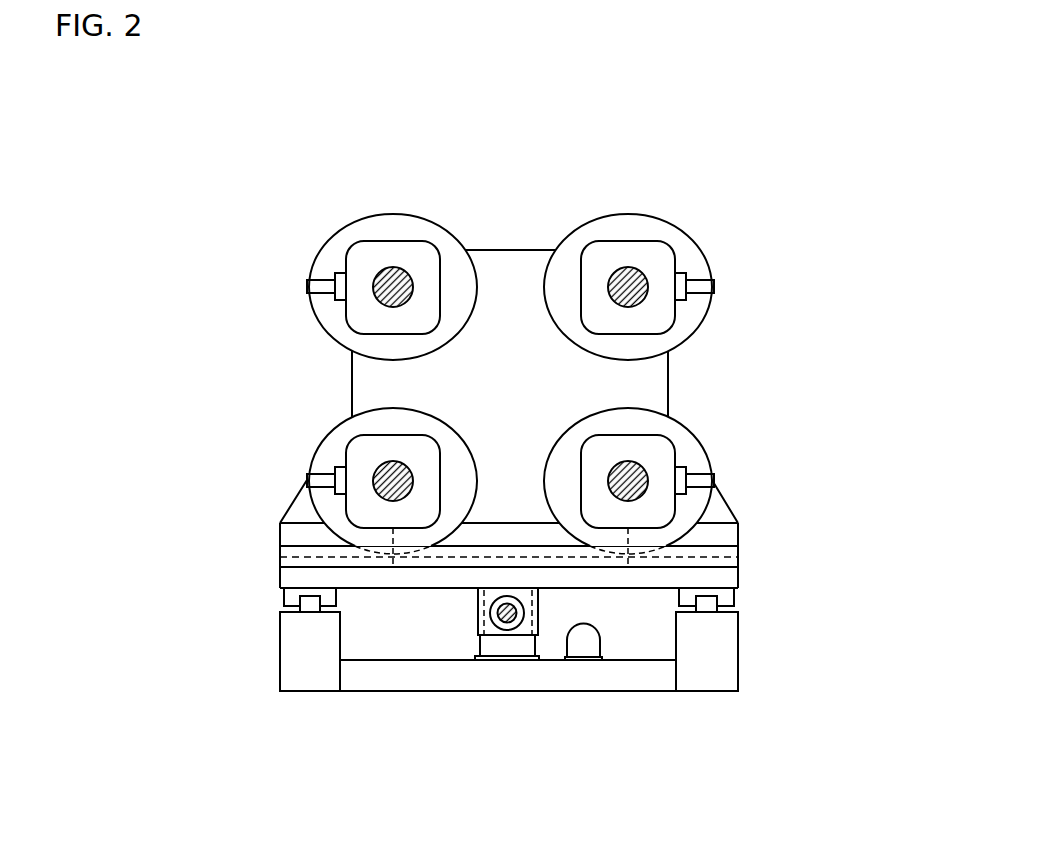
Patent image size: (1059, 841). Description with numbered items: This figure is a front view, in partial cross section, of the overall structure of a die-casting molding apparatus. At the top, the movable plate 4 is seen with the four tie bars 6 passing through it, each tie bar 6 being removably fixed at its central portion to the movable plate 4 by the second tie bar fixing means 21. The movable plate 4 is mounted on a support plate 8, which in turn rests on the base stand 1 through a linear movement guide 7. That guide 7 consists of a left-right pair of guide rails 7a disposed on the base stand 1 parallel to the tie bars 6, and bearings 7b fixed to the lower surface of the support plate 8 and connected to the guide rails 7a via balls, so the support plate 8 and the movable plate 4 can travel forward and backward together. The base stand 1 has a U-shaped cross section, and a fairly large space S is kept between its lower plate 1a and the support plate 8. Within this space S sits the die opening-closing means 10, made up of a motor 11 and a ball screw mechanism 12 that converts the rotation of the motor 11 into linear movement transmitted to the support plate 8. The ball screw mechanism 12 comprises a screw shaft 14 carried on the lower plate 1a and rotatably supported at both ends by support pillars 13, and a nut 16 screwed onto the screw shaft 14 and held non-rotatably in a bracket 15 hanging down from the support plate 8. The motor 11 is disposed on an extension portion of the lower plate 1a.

The base stand 1 is at (261, 661).
The lower plate 1a is at (655, 680).
The movable plate 4 is at (502, 229).
The tie bars 6 is at (392, 283).
The linear movement guide 7 is at (265, 594).
The guide rails 7a is at (708, 612).
The bearings 7b is at (733, 600).
The support plate 8 is at (264, 567).
The die opening-closing means 10 is at (452, 666).
The motor 11 is at (583, 648).
The ball screw mechanism 12 is at (447, 765).
The support pillars 13 is at (480, 645).
The screw shaft 14 is at (514, 630).
The bracket 15 is at (538, 598).
The nut 16 is at (494, 630).
The second tie bar fixing means 21 is at (329, 235).
The space S is at (350, 640).